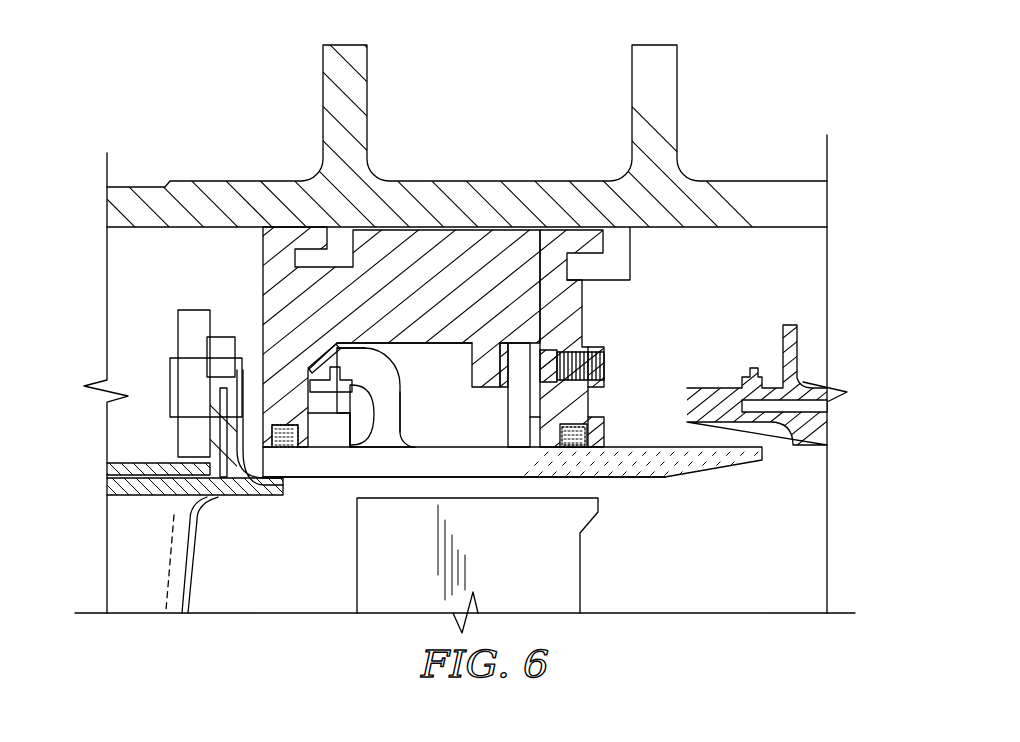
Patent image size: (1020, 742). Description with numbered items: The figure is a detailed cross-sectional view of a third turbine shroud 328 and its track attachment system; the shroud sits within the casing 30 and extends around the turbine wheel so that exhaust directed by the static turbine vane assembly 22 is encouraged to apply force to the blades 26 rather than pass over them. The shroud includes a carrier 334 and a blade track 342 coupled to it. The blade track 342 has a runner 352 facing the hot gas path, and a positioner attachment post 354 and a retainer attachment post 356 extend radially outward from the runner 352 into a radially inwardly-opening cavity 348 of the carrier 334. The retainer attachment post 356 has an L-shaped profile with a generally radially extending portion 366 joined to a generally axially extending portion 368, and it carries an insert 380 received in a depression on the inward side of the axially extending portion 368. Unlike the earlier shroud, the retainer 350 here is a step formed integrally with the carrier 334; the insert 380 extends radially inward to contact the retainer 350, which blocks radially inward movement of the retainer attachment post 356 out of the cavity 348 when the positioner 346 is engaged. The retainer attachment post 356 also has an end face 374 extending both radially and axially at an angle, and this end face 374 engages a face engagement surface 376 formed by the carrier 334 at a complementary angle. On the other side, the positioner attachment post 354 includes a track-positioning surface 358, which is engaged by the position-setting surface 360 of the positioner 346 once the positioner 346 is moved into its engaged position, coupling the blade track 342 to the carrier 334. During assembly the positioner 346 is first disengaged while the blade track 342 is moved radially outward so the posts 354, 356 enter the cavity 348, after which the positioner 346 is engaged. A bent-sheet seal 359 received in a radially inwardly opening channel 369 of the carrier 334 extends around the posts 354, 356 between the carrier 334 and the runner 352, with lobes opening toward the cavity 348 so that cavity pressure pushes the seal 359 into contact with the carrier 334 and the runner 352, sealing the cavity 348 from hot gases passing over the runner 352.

The static turbine vane assembly 22 is at (166, 578).
The blades 26 is at (549, 603).
The casing 30 is at (763, 197).
The turbine shroud 328 is at (231, 291).
The carrier 334 is at (439, 300).
The blade track 342 is at (698, 479).
The positioner 346 is at (550, 355).
The cavity 348 is at (425, 356).
The retainer 350 is at (343, 406).
The runner 352 is at (620, 480).
The positioner attachment post 354 is at (523, 442).
The retainer attachment post 356 is at (380, 425).
The track-positioning surface 358 is at (545, 360).
The bent-sheet seal 359 is at (278, 450).
The position-setting surface 360 is at (589, 438).
The generally radially extending portion 366 is at (380, 418).
The generally axially extending portion 368 is at (382, 377).
The radially-inwardly opening channel 369 is at (556, 449).
The end face 374 is at (359, 361).
The face engagement surface 376 is at (321, 342).
The insert 380 is at (326, 393).